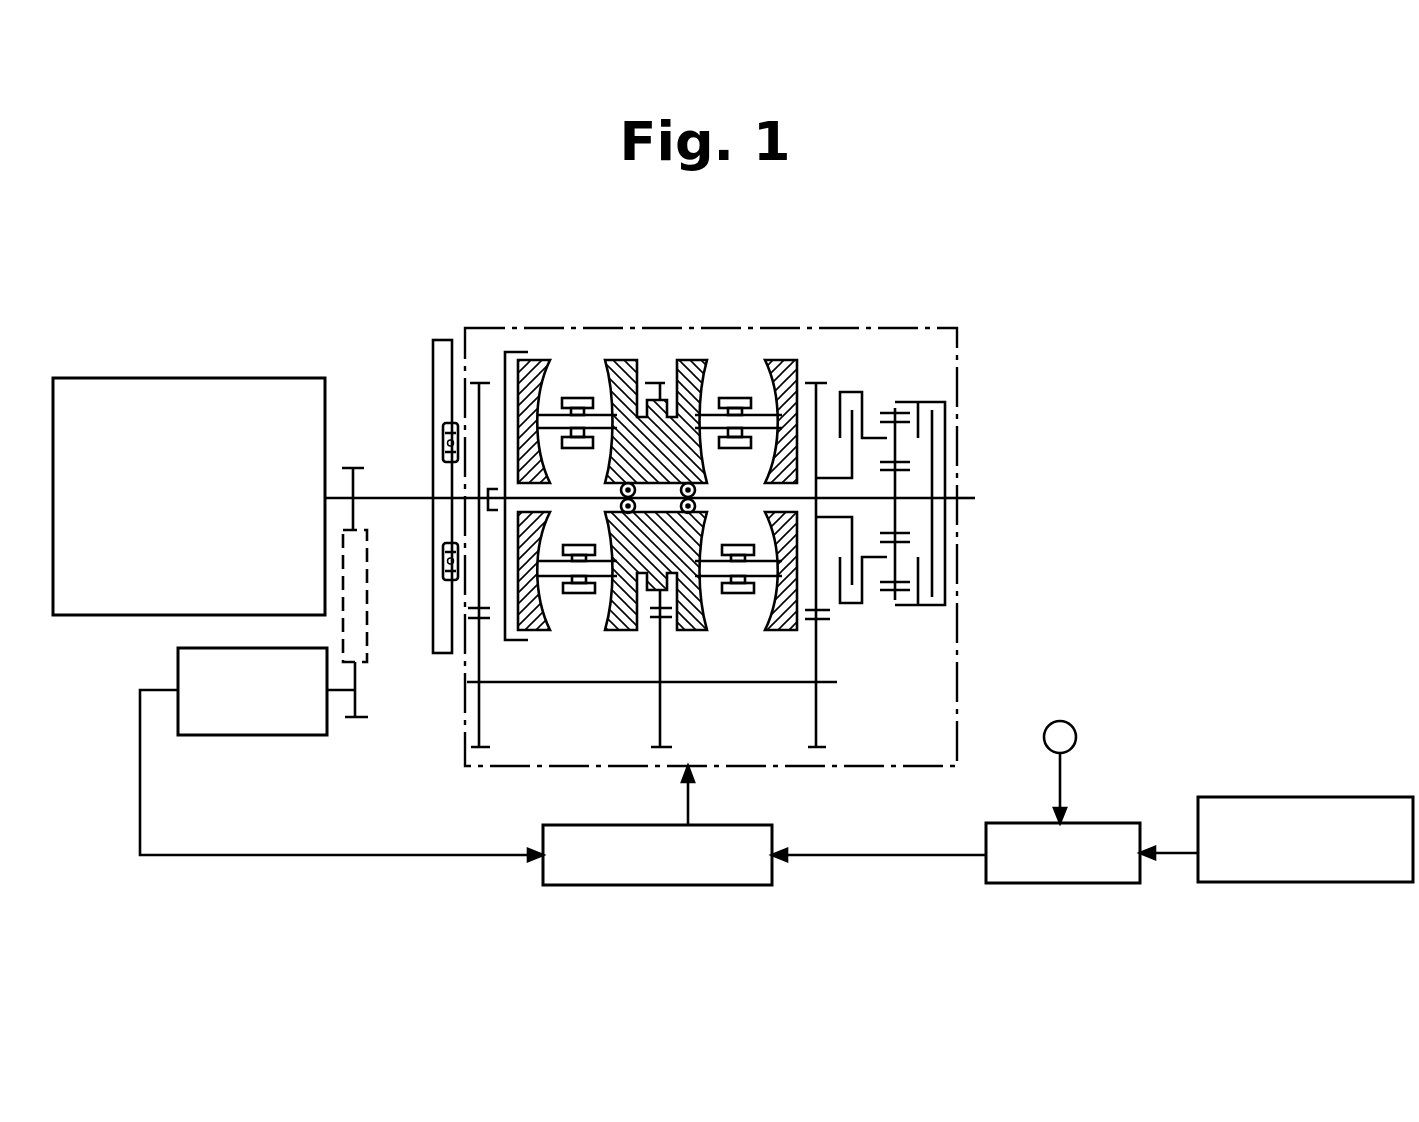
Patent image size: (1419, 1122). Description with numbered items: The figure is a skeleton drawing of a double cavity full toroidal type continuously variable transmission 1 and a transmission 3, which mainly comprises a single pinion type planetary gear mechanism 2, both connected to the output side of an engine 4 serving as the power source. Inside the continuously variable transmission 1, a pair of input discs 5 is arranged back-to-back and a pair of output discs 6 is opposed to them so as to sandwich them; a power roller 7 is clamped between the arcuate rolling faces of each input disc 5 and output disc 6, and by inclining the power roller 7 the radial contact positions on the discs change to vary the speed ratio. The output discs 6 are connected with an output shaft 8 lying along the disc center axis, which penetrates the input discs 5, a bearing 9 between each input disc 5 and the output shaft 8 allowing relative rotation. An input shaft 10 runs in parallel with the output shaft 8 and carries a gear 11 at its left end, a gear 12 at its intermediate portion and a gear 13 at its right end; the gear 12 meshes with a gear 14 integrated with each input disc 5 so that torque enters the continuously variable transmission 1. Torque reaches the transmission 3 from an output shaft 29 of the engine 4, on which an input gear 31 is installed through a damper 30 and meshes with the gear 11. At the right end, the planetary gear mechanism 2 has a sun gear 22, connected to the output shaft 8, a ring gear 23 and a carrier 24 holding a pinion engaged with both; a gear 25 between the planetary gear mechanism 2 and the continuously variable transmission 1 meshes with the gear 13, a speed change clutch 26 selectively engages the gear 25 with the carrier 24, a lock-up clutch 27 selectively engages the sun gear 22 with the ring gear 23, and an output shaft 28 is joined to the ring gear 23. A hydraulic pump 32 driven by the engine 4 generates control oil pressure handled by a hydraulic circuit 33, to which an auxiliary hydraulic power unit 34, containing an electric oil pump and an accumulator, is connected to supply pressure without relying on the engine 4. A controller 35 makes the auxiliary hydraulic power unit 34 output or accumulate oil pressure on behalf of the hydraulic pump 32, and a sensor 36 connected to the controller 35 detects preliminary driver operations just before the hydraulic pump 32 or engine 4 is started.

The continuously variable transmission 1 is at (633, 338).
The planetary gear mechanism 2 is at (908, 343).
The transmission 3 is at (957, 356).
The engine 4 is at (198, 378).
The input discs 5 is at (617, 360).
The output discs 6 is at (540, 360).
The power roller 7 is at (745, 410).
The output shaft 8 is at (728, 498).
The bearing 9 is at (617, 504).
The input shaft 10 is at (716, 683).
The gear 11 is at (490, 748).
The gear 12 is at (652, 748).
The gear 13 is at (826, 752).
The gear 14 is at (668, 604).
The sun gear 22 is at (905, 527).
The ring gear 23 is at (881, 412).
The carrier 24 is at (872, 442).
The gear 25 is at (825, 605).
The speed change clutch 26 is at (862, 604).
The lock-up clutch 27 is at (935, 413).
The output shaft 28 is at (970, 498).
The output shaft 29 is at (398, 497).
The damper 30 is at (447, 550).
The input gear 31 is at (478, 358).
The hydraulic pump 32 is at (280, 732).
The hydraulic circuit 33 is at (745, 825).
The auxiliary hydraulic power unit 34 is at (1242, 797).
The controller 35 is at (1090, 825).
The sensor 36 is at (1077, 735).